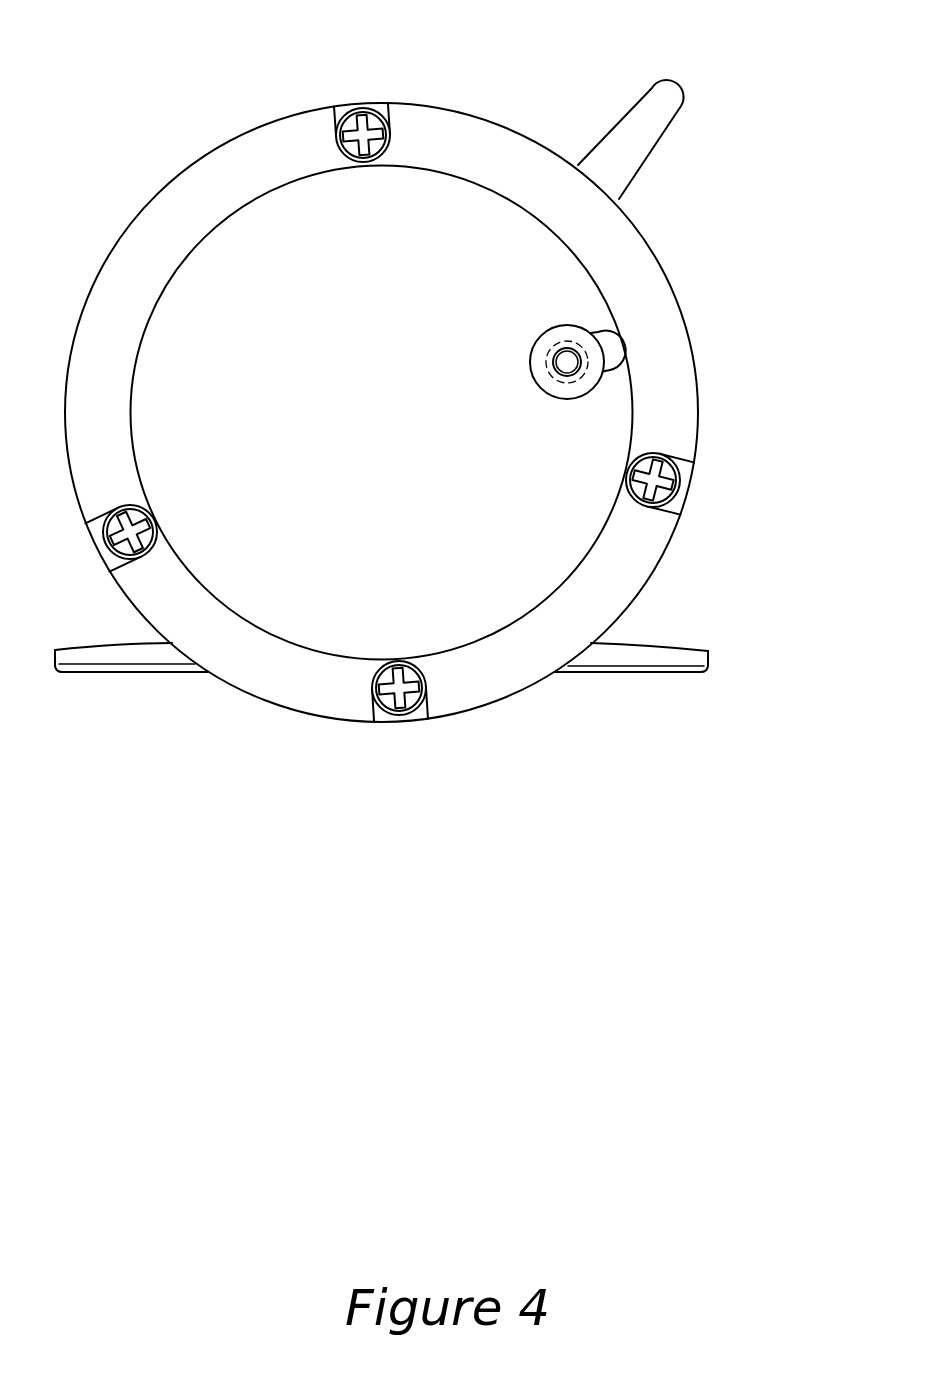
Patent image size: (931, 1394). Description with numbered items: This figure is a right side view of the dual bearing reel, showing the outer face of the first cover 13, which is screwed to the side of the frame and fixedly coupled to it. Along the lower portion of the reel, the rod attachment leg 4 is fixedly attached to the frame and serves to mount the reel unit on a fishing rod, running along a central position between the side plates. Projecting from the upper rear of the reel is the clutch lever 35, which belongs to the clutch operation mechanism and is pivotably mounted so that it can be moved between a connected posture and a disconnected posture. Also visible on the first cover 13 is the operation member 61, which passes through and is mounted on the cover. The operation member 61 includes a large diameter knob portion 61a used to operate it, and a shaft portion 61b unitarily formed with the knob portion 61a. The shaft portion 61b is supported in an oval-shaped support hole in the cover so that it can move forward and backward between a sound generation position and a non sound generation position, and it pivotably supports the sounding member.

The rod attachment leg 4 is at (667, 658).
The first cover 13 is at (612, 233).
The clutch lever 35 is at (662, 98).
The operation member 61 is at (658, 308).
The knob portion 61a is at (598, 378).
The shaft portion 61b is at (575, 350).